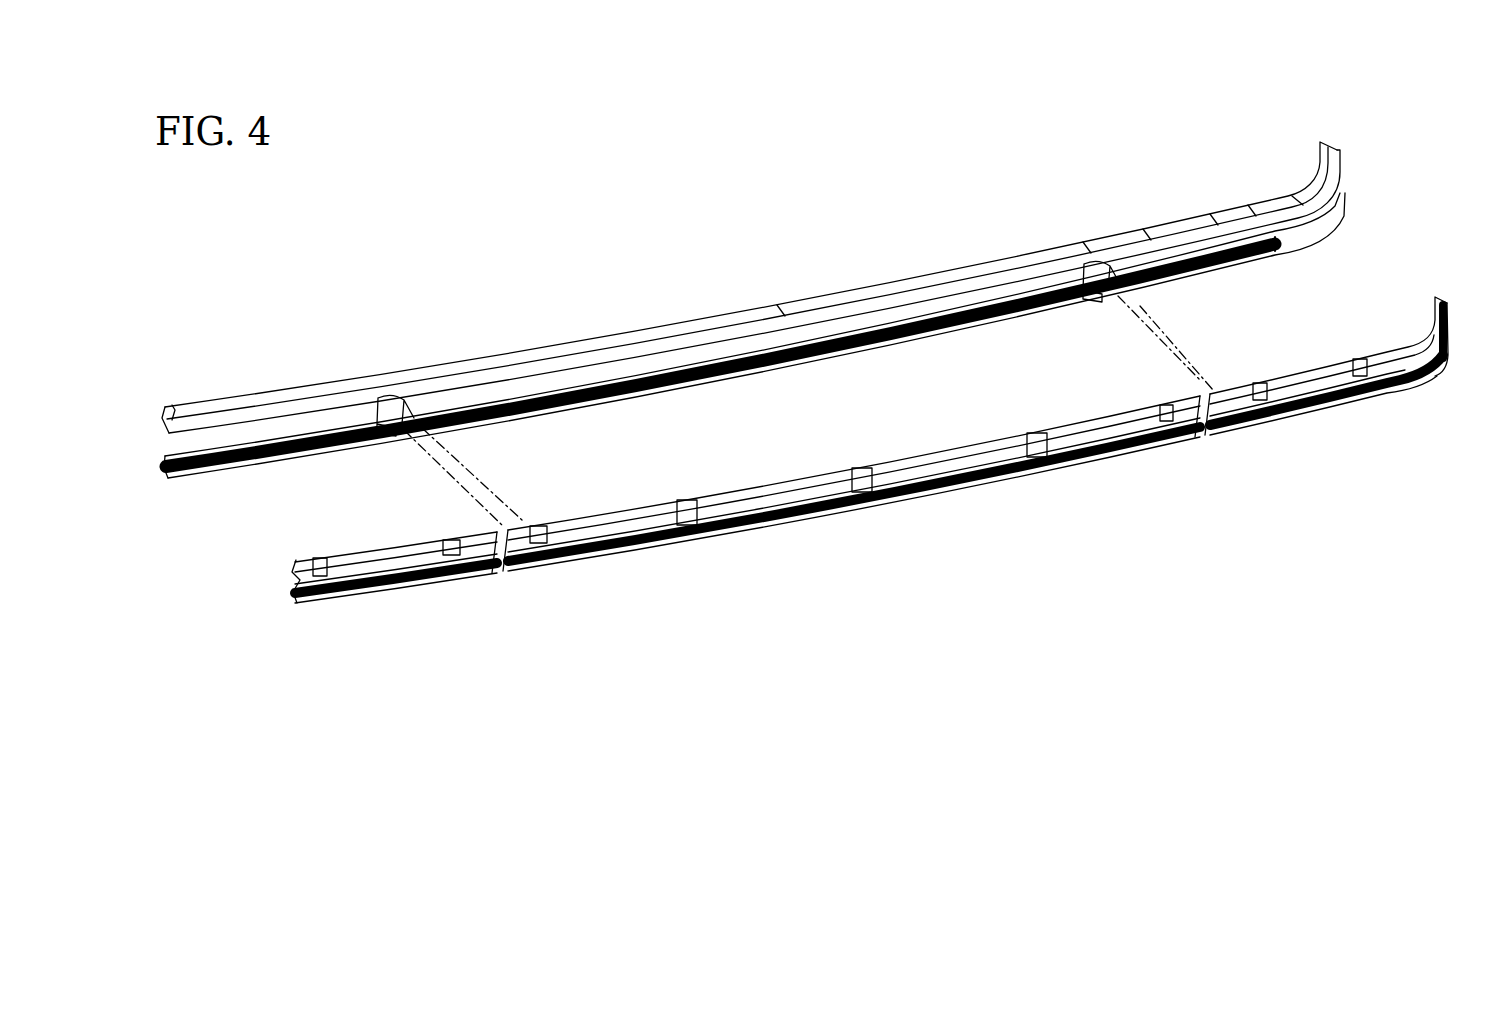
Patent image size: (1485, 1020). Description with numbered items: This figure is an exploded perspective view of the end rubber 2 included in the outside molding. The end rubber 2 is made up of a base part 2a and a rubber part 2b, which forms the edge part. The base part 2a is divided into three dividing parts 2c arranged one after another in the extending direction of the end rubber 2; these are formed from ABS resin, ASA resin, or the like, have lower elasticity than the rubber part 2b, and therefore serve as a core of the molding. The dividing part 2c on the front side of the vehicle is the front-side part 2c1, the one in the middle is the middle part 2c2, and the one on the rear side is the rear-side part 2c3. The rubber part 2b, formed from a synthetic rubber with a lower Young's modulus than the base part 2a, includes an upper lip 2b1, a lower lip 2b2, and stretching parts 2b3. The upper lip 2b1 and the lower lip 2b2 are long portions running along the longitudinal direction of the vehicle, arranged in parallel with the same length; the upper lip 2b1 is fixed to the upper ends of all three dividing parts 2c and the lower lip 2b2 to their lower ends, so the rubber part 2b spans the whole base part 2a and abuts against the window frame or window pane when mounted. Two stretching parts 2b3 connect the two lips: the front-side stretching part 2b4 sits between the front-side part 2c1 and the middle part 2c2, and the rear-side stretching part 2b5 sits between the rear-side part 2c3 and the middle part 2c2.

The end rubber 2 is at (1139, 182).
The base part 2a is at (1358, 538).
The rubber part 2b is at (796, 289).
The upper lip 2b1 is at (557, 347).
The lower lip 2b2 is at (662, 398).
The stretching parts 2b3 is at (755, 344).
The front-side stretching part 2b4 is at (380, 417).
The rear-side stretching part 2b5 is at (1087, 283).
The dividing parts 2c is at (870, 499).
The front-side part 2c1 is at (413, 587).
The middle part 2c2 is at (900, 500).
The rear-side part 2c3 is at (1258, 427).